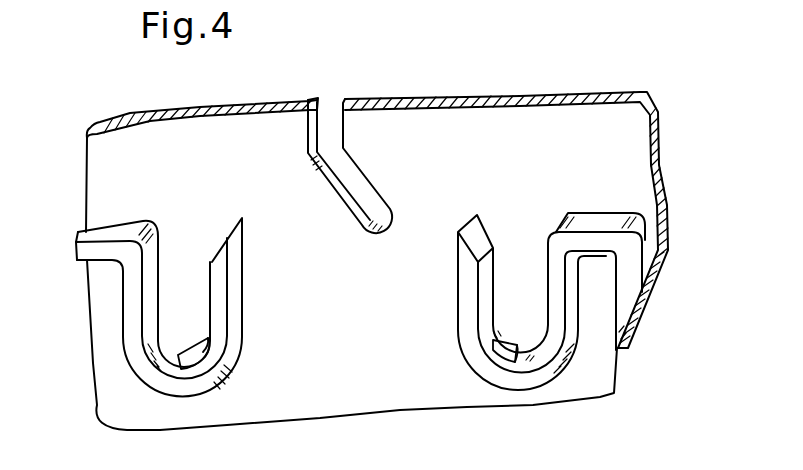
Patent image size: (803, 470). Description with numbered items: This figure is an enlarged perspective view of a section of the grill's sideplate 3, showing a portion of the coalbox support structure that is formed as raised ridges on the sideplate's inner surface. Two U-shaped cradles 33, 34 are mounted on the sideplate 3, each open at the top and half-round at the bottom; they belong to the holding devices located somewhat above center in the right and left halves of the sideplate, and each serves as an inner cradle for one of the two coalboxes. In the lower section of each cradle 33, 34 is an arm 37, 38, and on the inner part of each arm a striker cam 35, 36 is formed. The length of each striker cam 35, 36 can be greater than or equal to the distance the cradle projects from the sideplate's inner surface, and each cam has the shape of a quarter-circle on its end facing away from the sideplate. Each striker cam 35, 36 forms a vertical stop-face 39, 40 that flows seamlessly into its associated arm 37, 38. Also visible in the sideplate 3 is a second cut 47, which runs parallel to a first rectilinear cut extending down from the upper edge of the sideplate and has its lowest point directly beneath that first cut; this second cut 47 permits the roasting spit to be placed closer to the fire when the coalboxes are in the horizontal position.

The sideplate 3 is at (475, 97).
The second cut 47 is at (327, 108).
The U-shaped cradle 34 is at (190, 263).
The U-shaped cradle 33 is at (527, 252).
The arm 38 is at (235, 272).
The arm 37 is at (465, 285).
The striker cam 36 is at (190, 340).
The striker cam 35 is at (495, 344).
The vertical stop-face 40 is at (178, 348).
The vertical stop-face 39 is at (521, 345).